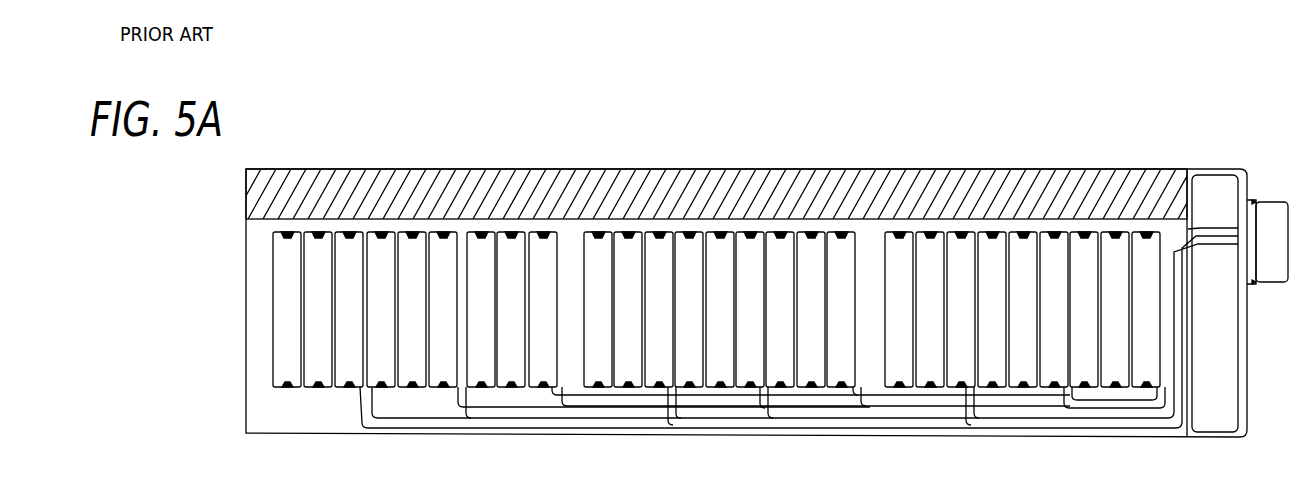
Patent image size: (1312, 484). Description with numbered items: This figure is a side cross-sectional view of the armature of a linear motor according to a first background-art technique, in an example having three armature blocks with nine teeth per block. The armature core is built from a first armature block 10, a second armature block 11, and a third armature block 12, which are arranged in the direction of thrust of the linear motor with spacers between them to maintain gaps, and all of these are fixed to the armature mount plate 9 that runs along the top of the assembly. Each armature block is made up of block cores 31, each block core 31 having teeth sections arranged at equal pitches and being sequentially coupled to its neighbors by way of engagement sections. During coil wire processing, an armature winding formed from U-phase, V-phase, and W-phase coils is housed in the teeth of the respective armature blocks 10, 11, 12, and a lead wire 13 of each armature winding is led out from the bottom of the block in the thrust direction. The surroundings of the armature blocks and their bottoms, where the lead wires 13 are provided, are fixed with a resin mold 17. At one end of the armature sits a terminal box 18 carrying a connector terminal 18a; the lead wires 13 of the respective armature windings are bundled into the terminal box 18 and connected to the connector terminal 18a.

The armature mount plate 9 is at (544, 190).
The first armature block 10 is at (413, 235).
The second armature block 11 is at (750, 235).
The third armature block 12 is at (1086, 235).
The lead wire 13 is at (632, 420).
The resin mold 17 is at (305, 413).
The terminal box 18 is at (1250, 336).
The connector terminal 18a is at (1268, 200).
The block core 31 is at (897, 252).